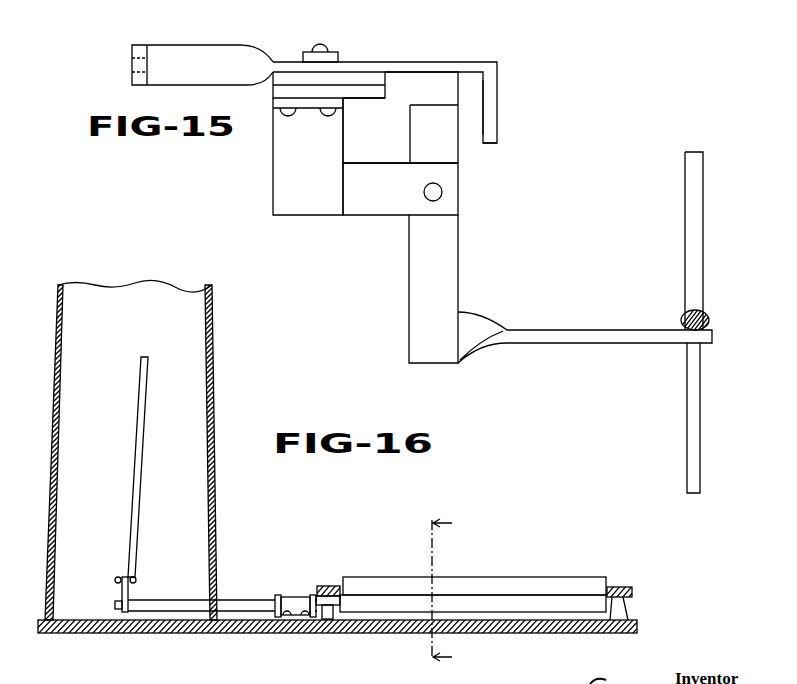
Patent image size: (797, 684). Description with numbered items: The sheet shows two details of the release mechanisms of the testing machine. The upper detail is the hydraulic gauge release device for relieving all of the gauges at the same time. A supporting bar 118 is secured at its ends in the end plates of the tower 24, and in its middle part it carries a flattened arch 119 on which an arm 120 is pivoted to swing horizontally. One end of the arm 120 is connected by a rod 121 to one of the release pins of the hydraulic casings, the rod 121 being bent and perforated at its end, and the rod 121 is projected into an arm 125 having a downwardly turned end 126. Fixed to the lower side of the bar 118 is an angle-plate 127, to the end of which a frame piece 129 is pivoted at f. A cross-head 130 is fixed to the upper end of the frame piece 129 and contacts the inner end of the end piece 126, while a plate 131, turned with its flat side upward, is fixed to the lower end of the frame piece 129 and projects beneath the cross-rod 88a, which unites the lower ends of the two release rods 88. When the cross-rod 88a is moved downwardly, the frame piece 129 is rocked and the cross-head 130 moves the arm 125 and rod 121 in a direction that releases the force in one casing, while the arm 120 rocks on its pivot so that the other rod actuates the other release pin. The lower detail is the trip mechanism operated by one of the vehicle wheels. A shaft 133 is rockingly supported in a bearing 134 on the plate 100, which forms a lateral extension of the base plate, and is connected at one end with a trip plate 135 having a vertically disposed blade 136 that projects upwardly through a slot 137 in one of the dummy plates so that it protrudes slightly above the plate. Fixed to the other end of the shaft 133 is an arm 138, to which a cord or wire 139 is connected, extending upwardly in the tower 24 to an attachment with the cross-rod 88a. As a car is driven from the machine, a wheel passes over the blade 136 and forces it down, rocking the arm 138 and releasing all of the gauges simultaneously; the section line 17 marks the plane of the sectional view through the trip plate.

In FIG. 15, the rod 121 is at (197, 62).
In FIG. 15, the arm 120 is at (308, 53).
In FIG. 15, the flattened arch 119 is at (367, 72).
In FIG. 15, the arm 125 is at (462, 64).
In FIG. 15, the downwardly turned end 126 is at (494, 98).
In FIG. 15, the cross-head 130 is at (488, 120).
In FIG. 15, the supporting bar 118 is at (368, 99).
In FIG. 15, the pivot f is at (443, 188).
In FIG. 15, the angle-plate 127 is at (358, 208).
In FIG. 15, the frame piece 129 is at (450, 252).
In FIG. 15, the plate 131 is at (587, 338).
In FIG. 15, the release rod 88 is at (690, 202).
In FIG. 15, the cross-rod 88a is at (701, 312).
In FIG. 15, the cord or wire 139 is at (690, 398).
In FIG. 16, the cord or wire 139 is at (139, 452).
In FIG. 16, the tower 24 is at (203, 364).
In FIG. 16, the arm 138 is at (118, 595).
In FIG. 16, the shaft 133 is at (262, 600).
In FIG. 16, the bearing 134 is at (300, 593).
In FIG. 16, the slot 137 is at (343, 580).
In FIG. 16, the blade 136 is at (513, 585).
In FIG. 16, the trip plate 135 is at (550, 600).
In FIG. 16, the plate 100 is at (243, 635).
In FIG. 16, the section line 17 is at (435, 591).